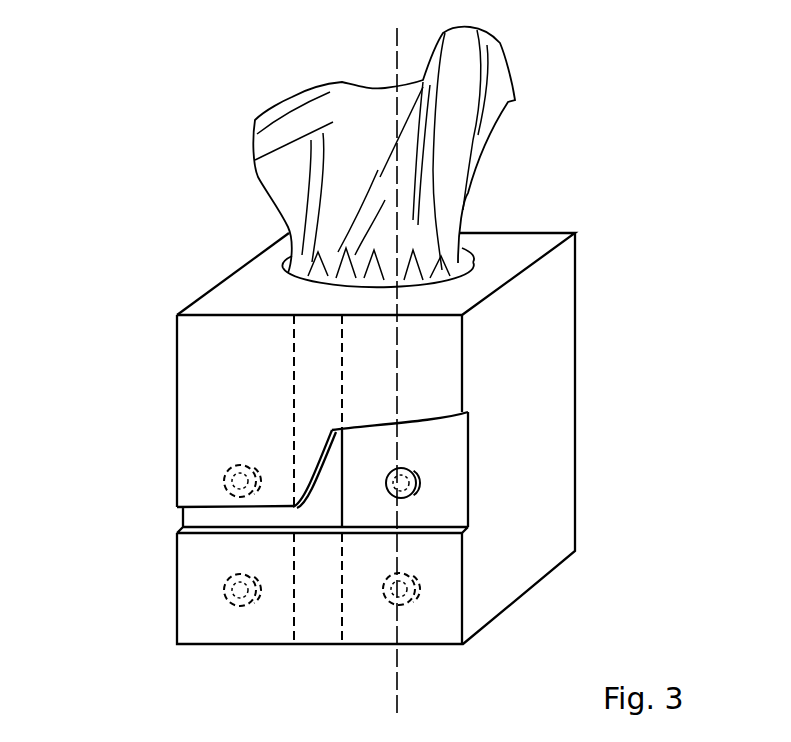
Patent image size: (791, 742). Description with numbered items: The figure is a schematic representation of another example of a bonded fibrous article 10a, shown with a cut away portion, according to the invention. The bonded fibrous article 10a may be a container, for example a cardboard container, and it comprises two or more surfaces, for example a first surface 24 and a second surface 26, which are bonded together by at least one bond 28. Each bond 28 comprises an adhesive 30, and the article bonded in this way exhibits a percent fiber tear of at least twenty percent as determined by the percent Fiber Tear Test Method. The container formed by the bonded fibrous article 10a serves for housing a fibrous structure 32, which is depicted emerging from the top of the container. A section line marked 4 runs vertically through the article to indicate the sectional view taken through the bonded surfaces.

The bonded fibrous article 10a is at (556, 200).
The first surface 24 is at (439, 425).
The second surface 26 is at (458, 486).
The bond 28 is at (228, 474).
The adhesive 30 is at (233, 486).
The fibrous structure 32 is at (375, 136).
The section line 4- 4 is at (397, 28).